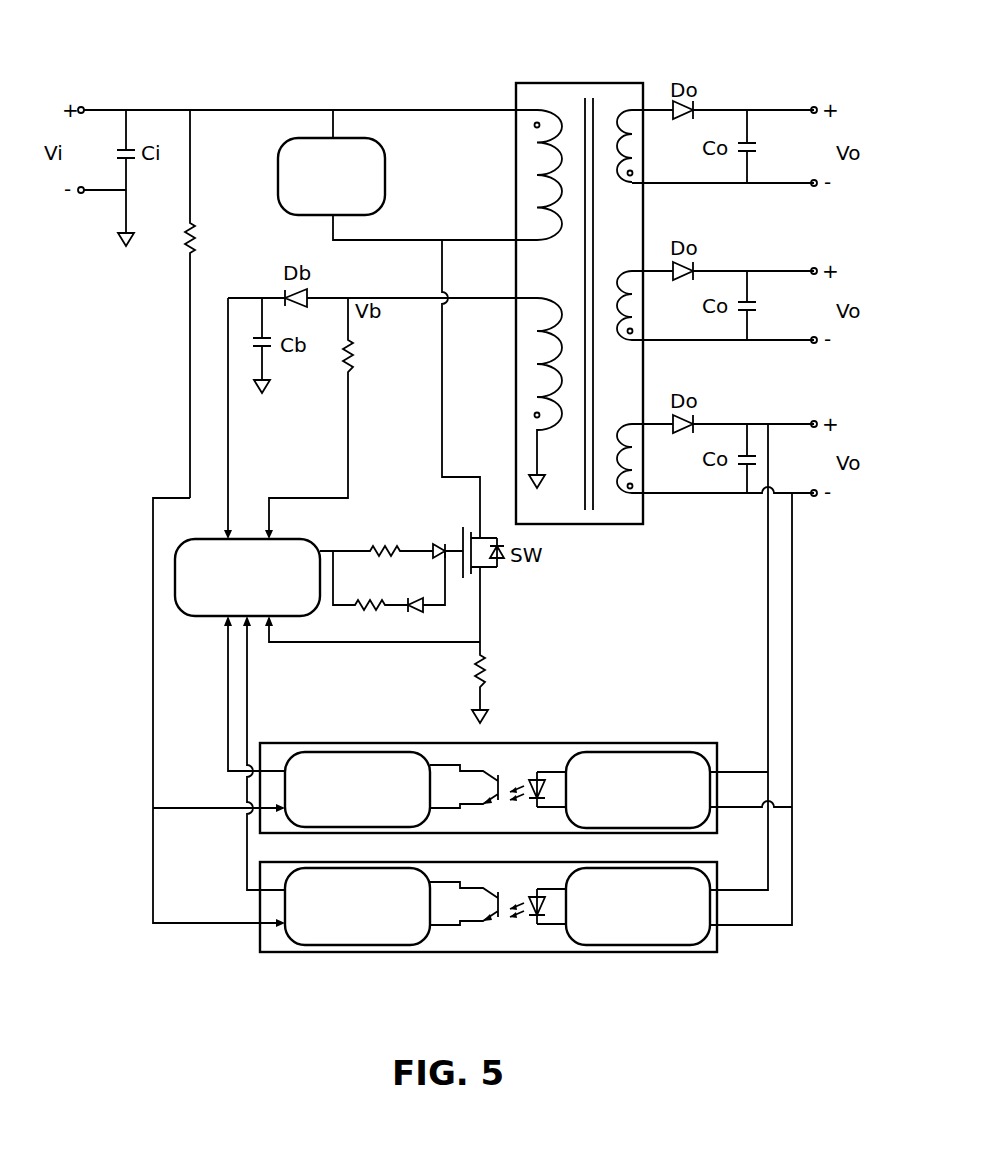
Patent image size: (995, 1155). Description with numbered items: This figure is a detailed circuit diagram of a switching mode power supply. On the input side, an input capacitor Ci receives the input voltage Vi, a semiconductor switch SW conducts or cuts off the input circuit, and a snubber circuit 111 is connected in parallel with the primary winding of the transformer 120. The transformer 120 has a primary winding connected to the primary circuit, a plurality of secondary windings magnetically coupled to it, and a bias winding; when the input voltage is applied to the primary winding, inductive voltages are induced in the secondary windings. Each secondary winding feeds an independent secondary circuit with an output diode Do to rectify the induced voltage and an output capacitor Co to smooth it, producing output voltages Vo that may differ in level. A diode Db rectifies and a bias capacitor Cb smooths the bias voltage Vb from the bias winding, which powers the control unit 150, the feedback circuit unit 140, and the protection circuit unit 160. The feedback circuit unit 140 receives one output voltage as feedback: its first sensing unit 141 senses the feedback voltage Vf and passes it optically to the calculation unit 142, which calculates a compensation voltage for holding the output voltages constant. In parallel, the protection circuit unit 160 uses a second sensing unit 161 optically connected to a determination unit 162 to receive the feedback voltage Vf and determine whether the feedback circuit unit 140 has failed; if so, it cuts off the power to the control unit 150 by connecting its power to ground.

The snubber circuit 111 is at (331, 176).
The transformer 120 is at (580, 82).
The feedback circuit unit 140 is at (526, 757).
The first sensing unit 141 is at (638, 790).
The calculation unit 142 is at (357, 789).
The control unit 150 is at (247, 577).
The protection circuit unit 160 is at (488, 940).
The second sensing unit 161 is at (638, 906).
The determination unit 162 is at (357, 906).